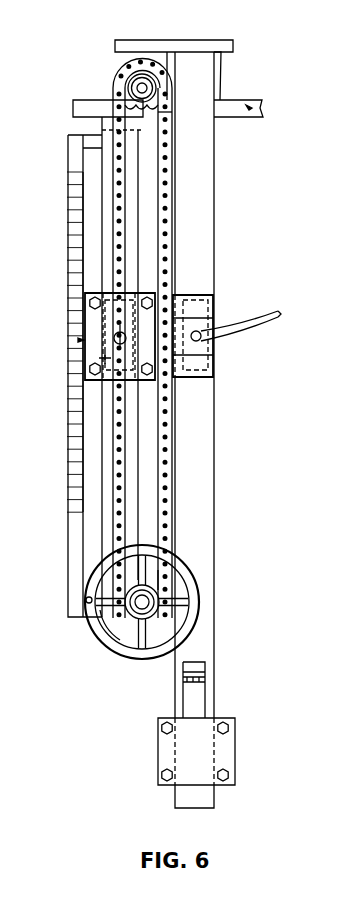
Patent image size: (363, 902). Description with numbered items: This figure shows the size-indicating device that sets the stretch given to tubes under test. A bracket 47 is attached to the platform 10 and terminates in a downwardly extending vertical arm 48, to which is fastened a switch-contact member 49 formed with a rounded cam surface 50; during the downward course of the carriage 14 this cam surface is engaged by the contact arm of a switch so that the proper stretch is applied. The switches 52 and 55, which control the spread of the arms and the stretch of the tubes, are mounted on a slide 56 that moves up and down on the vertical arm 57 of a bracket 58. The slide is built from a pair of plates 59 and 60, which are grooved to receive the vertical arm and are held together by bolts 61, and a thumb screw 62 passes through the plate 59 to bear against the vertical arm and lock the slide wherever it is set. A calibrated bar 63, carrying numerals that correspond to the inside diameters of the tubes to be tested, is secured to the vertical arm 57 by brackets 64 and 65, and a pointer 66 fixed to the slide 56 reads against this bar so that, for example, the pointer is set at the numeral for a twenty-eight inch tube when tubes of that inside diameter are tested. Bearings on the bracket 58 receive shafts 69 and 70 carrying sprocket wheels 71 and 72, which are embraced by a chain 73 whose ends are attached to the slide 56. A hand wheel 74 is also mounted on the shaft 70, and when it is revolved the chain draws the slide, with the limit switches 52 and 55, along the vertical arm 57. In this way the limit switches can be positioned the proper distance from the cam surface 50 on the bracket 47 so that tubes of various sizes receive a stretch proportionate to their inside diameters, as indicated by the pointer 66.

The platform 10 is at (212, 45).
The carriage 14 is at (252, 104).
The bracket 47 is at (220, 80).
The vertical arm 48 is at (214, 195).
The switch-contact member 49 is at (226, 753).
The cam surface 50 is at (205, 668).
The switch 52 is at (218, 305).
The switch 55 is at (104, 359).
The slide 56 is at (88, 295).
The vertical arm 57 is at (135, 250).
The bracket 58 is at (110, 118).
The plate 59 is at (100, 378).
The plate 60 is at (190, 298).
The bolts 61 is at (147, 372).
The thumb screw 62 is at (118, 331).
The calibrated bar 63 is at (72, 422).
The bracket 64 is at (92, 143).
The bracket 65 is at (107, 618).
The pointer 66 is at (80, 340).
The shaft 69 is at (145, 84).
The shaft 70 is at (140, 604).
The sprocket wheel 71 is at (170, 120).
The sprocket wheel 72 is at (160, 583).
The chain 73 is at (165, 470).
The hand wheel 74 is at (190, 608).